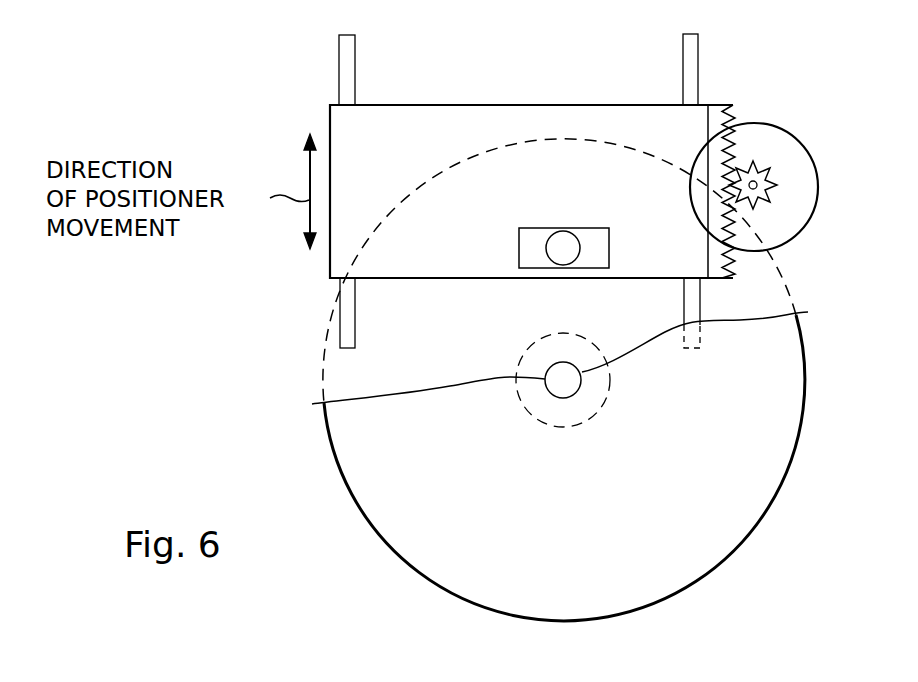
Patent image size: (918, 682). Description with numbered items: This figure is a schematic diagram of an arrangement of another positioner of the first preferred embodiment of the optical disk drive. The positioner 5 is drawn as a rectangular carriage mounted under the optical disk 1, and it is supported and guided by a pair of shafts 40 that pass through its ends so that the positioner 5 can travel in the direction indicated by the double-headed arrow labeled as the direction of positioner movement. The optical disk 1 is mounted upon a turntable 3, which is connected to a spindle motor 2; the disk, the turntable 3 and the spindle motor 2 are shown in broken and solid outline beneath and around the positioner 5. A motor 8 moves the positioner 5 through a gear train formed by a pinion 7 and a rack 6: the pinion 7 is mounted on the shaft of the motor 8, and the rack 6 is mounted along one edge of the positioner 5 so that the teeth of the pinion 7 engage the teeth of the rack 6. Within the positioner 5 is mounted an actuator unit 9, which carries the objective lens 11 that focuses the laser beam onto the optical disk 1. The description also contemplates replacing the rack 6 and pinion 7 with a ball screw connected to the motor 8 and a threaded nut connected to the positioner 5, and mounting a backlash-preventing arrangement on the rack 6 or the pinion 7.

The optical disk 1 is at (763, 457).
The spindle motor 2 is at (540, 343).
The turntable 3 is at (557, 392).
The positioner 5 is at (331, 114).
The rack 6 is at (732, 109).
The pinion 7 is at (774, 184).
The motor 8 is at (781, 145).
The actuator unit 9 is at (532, 228).
The objective lens 11 is at (576, 240).
The shafts 40 is at (339, 66).